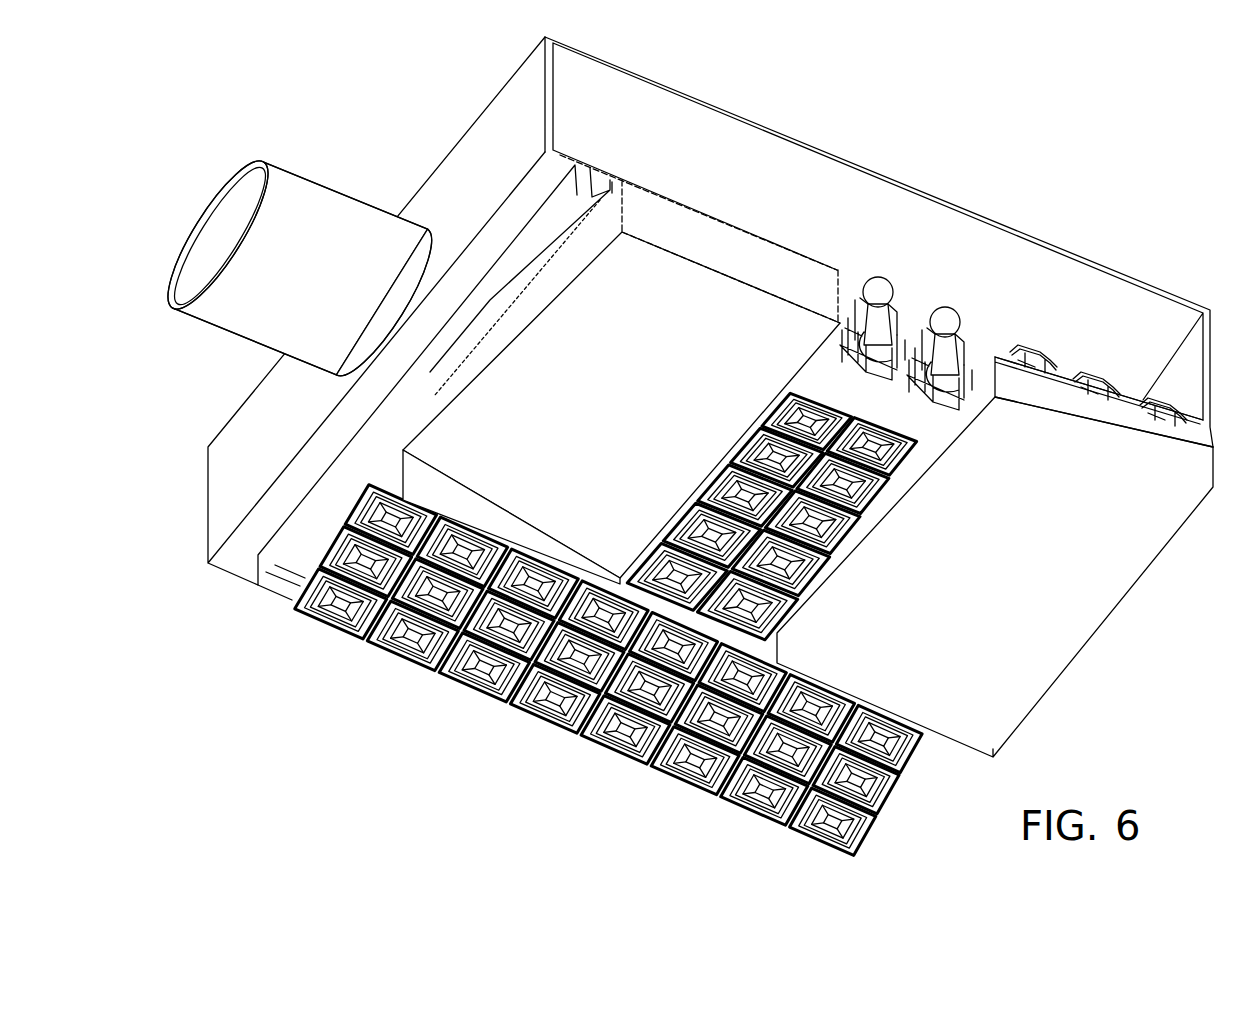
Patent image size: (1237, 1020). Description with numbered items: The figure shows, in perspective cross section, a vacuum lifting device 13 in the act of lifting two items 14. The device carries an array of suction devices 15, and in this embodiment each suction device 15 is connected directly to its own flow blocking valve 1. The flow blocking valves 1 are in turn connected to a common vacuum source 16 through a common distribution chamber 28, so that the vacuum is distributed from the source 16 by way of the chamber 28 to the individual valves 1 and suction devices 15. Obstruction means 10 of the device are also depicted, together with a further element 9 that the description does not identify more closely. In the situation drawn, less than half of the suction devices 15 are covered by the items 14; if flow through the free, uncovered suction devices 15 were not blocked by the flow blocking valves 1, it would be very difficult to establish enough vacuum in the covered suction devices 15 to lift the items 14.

The flow blocking valve 1 is at (1000, 350).
The connector 9 is at (943, 322).
The obstruction means 10 is at (993, 332).
The vacuum lifting device 13 is at (245, 140).
The item 14 is at (1070, 613).
The suction device 15 is at (580, 722).
The common vacuum source 16 is at (305, 243).
The common distribution chamber 28 is at (903, 233).